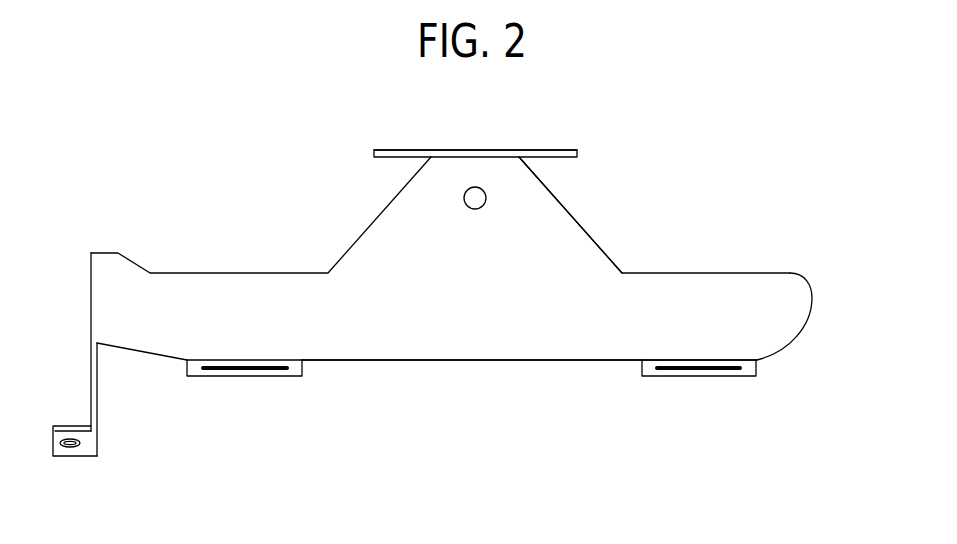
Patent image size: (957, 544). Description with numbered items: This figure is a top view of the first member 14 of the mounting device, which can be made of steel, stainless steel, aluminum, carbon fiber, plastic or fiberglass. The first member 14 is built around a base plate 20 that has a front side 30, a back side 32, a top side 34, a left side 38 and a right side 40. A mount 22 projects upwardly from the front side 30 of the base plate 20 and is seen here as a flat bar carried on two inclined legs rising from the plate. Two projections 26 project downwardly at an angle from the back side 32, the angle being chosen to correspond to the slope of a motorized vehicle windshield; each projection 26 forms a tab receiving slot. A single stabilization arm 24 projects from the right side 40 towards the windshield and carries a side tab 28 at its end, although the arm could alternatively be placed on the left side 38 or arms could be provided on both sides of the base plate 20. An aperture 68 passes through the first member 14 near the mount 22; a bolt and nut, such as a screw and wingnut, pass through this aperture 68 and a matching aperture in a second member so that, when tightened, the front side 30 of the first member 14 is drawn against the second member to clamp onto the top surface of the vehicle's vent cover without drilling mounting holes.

The first member 14 is at (806, 272).
The base plate 20 is at (532, 333).
The mount 22 is at (547, 150).
The stabilization arm 24 is at (97, 393).
The projections 26 is at (252, 376).
The side tab 28 is at (65, 456).
The front side 30 is at (465, 150).
The back side 32 is at (420, 361).
The top side 34 is at (587, 277).
The left side 38 is at (813, 302).
The right side 40 is at (91, 305).
The aperture 68 is at (475, 209).